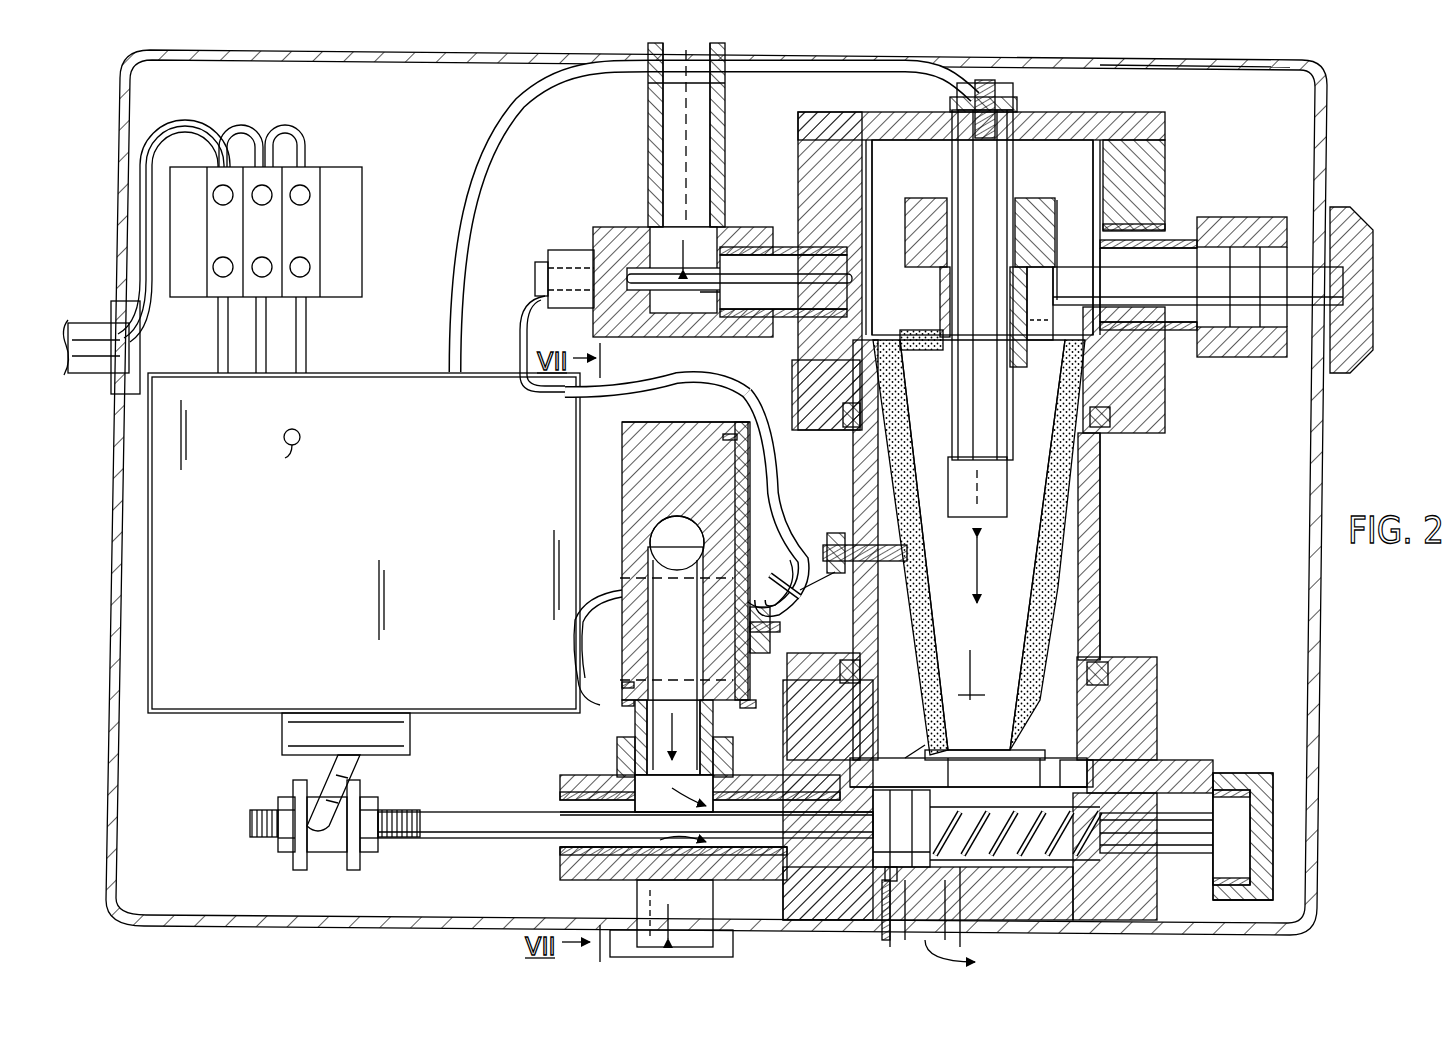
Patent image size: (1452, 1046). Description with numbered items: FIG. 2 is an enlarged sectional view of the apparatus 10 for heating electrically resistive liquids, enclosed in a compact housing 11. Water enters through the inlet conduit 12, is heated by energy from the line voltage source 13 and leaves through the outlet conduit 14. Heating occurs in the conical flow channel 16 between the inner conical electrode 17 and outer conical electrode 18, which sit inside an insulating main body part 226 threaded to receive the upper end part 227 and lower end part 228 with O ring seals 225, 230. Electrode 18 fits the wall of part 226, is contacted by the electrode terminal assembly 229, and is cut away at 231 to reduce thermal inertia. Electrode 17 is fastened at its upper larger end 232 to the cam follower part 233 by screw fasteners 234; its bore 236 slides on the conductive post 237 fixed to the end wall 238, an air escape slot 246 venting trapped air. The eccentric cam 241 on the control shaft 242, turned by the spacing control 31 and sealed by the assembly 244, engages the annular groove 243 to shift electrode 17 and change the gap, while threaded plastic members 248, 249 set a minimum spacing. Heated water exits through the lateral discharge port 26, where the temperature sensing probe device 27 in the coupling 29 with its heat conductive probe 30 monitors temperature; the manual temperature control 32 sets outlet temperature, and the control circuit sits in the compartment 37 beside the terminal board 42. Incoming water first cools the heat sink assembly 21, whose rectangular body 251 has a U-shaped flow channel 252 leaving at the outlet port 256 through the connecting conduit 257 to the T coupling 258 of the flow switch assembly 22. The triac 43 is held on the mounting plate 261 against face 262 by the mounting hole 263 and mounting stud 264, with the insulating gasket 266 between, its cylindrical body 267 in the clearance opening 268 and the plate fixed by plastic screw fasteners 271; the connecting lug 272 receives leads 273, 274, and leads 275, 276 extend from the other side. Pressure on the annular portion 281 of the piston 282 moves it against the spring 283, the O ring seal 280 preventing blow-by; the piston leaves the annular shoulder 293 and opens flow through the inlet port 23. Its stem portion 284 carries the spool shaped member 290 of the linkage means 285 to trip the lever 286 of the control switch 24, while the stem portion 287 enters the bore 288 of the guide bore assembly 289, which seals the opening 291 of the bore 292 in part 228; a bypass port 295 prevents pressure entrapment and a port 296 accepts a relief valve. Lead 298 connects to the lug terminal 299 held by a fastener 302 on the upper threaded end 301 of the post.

The apparatus 10 is at (1332, 96).
The housing 11 is at (1134, 68).
The inlet conduit 12 is at (713, 907).
The line voltage source 13 is at (78, 323).
The outlet conduit 14 is at (650, 48).
The conical flow channel 16 is at (910, 465).
The inner conical electrode 17 is at (1000, 755).
The outer conical electrode 18 is at (1065, 600).
The heat sink assembly 21 is at (674, 418).
The flow switch assembly 22 is at (852, 932).
The inlet port 23 is at (932, 770).
The control switch 24 is at (410, 738).
The lateral discharge port 26 is at (864, 270).
The temperature sensing probe device 27 is at (654, 300).
The coupling 29 is at (600, 240).
The heat conductive probe 30 is at (712, 322).
The electrode spacing control 31 is at (1345, 360).
The manual temperature control 32 is at (285, 458).
The control compartment 37 is at (378, 370).
The terminal board 42 is at (335, 167).
The triac 43 is at (624, 600).
The O ring seal 225 is at (1108, 662).
The main body part 226 is at (1098, 508).
The upper end part 227 is at (1168, 126).
The lower end part 228 is at (1160, 690).
The electrode terminal assembly 229 is at (820, 542).
The O ring seal 230 is at (1110, 427).
The cut away 231 is at (872, 640).
The upper larger end 232 is at (950, 290).
The cam follower part 233 is at (1025, 210).
The screw fasteners 234 is at (945, 345).
The bore 236 is at (1030, 225).
The conductive post 237 is at (1010, 165).
The end wall 238 is at (1047, 115).
The eccentric cam 241 is at (1040, 275).
The control shaft 242 is at (1150, 280).
The annular groove 243 is at (852, 278).
The shaft seal assembly 244 is at (1252, 362).
The air escape slot 246 is at (955, 170).
The threaded plastic spacer member 248 is at (1010, 752).
The threaded plastic spacer member 249 is at (972, 690).
The heat sink body 251 is at (622, 450).
The U-shaped flow channel 252 is at (655, 535).
The outlet port 256 is at (632, 740).
The connecting conduit 257 is at (733, 745).
The T coupling 258 is at (600, 870).
The mounting plate 261 is at (777, 505).
The face 262 is at (748, 470).
The mounting hole 263 is at (768, 653).
The mounting stud 264 is at (782, 628).
The insulating gasket 266 is at (756, 705).
The triac body 267 is at (622, 686).
The clearance opening 268 is at (622, 705).
The screw fasteners 271 is at (740, 438).
The connecting lug 272 is at (775, 580).
The electrical lead 273 is at (784, 590).
The electrical lead 274 is at (705, 378).
The triac lead 275 is at (574, 650).
The lead 276 is at (582, 592).
The O ring seal 280 is at (888, 826).
The annular portion 281 is at (968, 772).
The piston 282 is at (895, 867).
The spring 283 is at (943, 755).
The stem portion 284 is at (435, 840).
The linkage means 285 is at (245, 846).
The switch lever 286 is at (340, 770).
The stem portion 287 is at (1130, 880).
The guide bore 288 is at (1213, 898).
The guide bore assembly 289 is at (1258, 770).
The spool shaped member 290 is at (307, 862).
The opening 291 is at (1150, 800).
The piston bore 292 is at (1088, 787).
The annular shoulder 293 is at (880, 858).
The bypass port 295 is at (1034, 787).
The relief port 296 is at (912, 935).
The lead 298 is at (525, 112).
The lug terminal 299 is at (950, 100).
The upper threaded end 301 is at (988, 82).
The fastener 302 is at (968, 84).